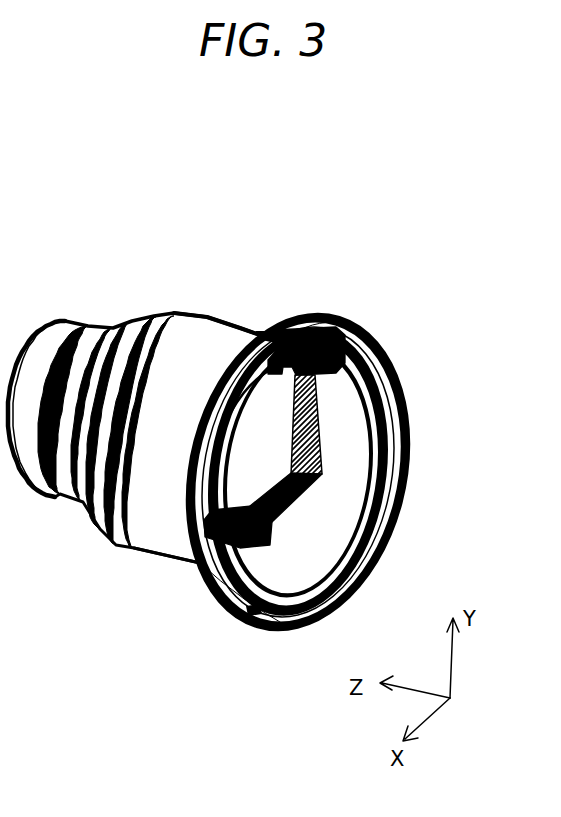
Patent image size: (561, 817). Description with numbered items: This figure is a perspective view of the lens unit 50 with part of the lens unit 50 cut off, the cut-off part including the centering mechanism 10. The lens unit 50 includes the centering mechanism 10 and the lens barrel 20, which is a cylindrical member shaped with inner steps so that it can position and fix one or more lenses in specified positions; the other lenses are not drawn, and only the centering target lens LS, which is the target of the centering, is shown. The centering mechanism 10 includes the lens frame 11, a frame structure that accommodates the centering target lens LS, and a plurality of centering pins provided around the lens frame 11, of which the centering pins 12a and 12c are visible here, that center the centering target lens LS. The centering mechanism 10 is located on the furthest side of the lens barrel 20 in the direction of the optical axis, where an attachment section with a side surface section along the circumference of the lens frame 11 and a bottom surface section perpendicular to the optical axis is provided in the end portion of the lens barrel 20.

The lens unit 50 is at (213, 190).
The centering mechanism 10 is at (327, 240).
The lens barrel 20 is at (165, 312).
The lens frame 11 is at (384, 352).
The centering pin 12a is at (287, 330).
The centering pin 12c is at (204, 562).
The centering target lens LS is at (330, 513).